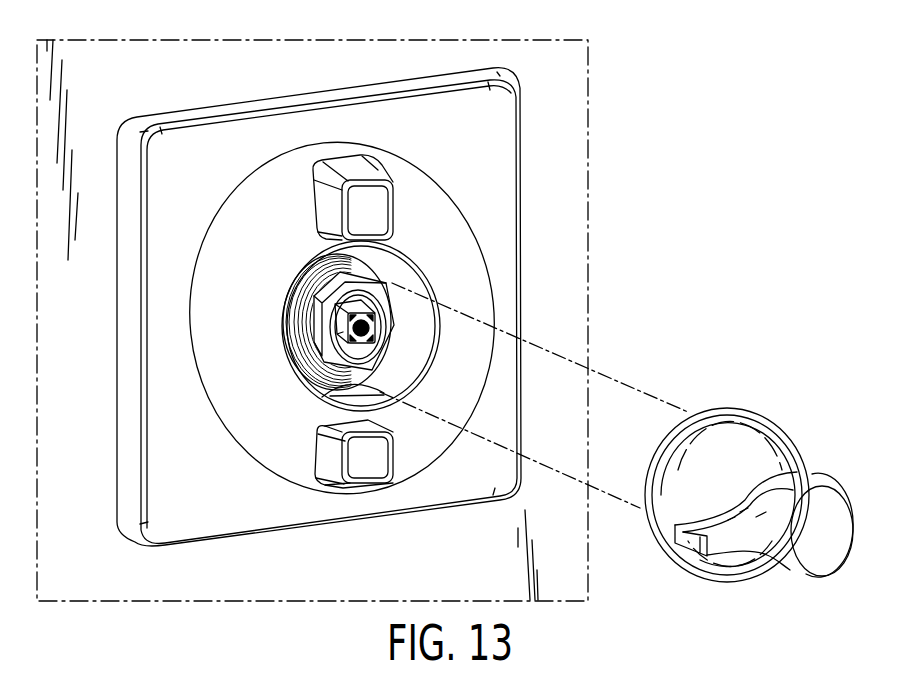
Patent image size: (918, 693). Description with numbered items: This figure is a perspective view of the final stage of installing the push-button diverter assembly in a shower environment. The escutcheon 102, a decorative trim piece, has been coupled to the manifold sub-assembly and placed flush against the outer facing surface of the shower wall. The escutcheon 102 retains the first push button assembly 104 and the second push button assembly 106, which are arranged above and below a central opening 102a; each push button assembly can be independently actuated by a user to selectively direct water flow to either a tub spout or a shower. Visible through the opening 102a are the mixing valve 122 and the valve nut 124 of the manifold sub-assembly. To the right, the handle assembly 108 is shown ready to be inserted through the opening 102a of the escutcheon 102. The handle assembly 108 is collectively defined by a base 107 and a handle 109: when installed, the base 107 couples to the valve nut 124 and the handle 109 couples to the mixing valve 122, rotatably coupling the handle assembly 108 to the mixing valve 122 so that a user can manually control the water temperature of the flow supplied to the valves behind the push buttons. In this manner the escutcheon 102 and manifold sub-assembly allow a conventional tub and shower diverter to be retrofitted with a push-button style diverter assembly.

The escutcheon 102 is at (497, 147).
The central opening 102a is at (416, 362).
The first push button assembly 104 is at (356, 201).
The second push button assembly 106 is at (362, 460).
The base 107 is at (737, 427).
The handle assembly 108 is at (757, 485).
The handle 109 is at (817, 552).
The mixing valve 122 is at (340, 327).
The valve nut 124 is at (317, 363).